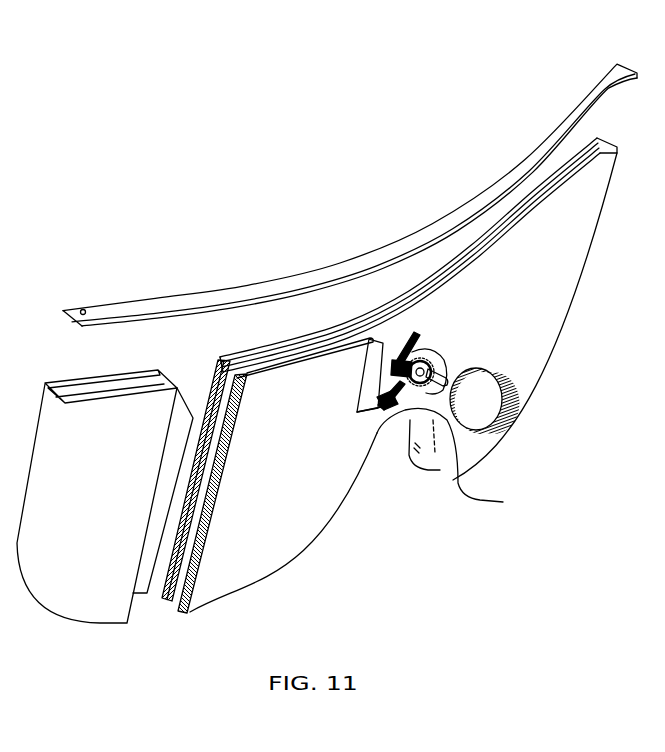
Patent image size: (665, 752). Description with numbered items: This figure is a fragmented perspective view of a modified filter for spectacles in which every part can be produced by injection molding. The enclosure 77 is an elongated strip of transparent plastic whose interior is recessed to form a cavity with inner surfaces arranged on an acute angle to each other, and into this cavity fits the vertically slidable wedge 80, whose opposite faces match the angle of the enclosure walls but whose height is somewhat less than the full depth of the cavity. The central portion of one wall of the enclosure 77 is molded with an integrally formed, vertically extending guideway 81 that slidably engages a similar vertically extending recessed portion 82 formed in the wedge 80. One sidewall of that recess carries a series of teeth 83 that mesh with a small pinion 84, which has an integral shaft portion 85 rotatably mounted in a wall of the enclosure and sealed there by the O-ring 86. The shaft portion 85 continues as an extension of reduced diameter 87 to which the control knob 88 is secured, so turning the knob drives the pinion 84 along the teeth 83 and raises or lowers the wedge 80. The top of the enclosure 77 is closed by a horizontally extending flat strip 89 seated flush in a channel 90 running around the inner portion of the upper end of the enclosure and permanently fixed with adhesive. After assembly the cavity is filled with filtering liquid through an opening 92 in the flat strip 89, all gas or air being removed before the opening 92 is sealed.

The enclosure 77 is at (562, 337).
The wedge 80 is at (150, 530).
The guideway 81 is at (395, 395).
The recessed portion 82 is at (383, 366).
The teeth 83 is at (403, 395).
The pinion 84 is at (401, 345).
The shaft portion 85 is at (456, 462).
The O-ring 86 is at (429, 356).
The extension of reduced diameter 87 is at (448, 378).
The control knob 88 is at (488, 397).
The flat strip 89 is at (608, 86).
The channel 90 is at (73, 379).
The opening 92 is at (83, 308).